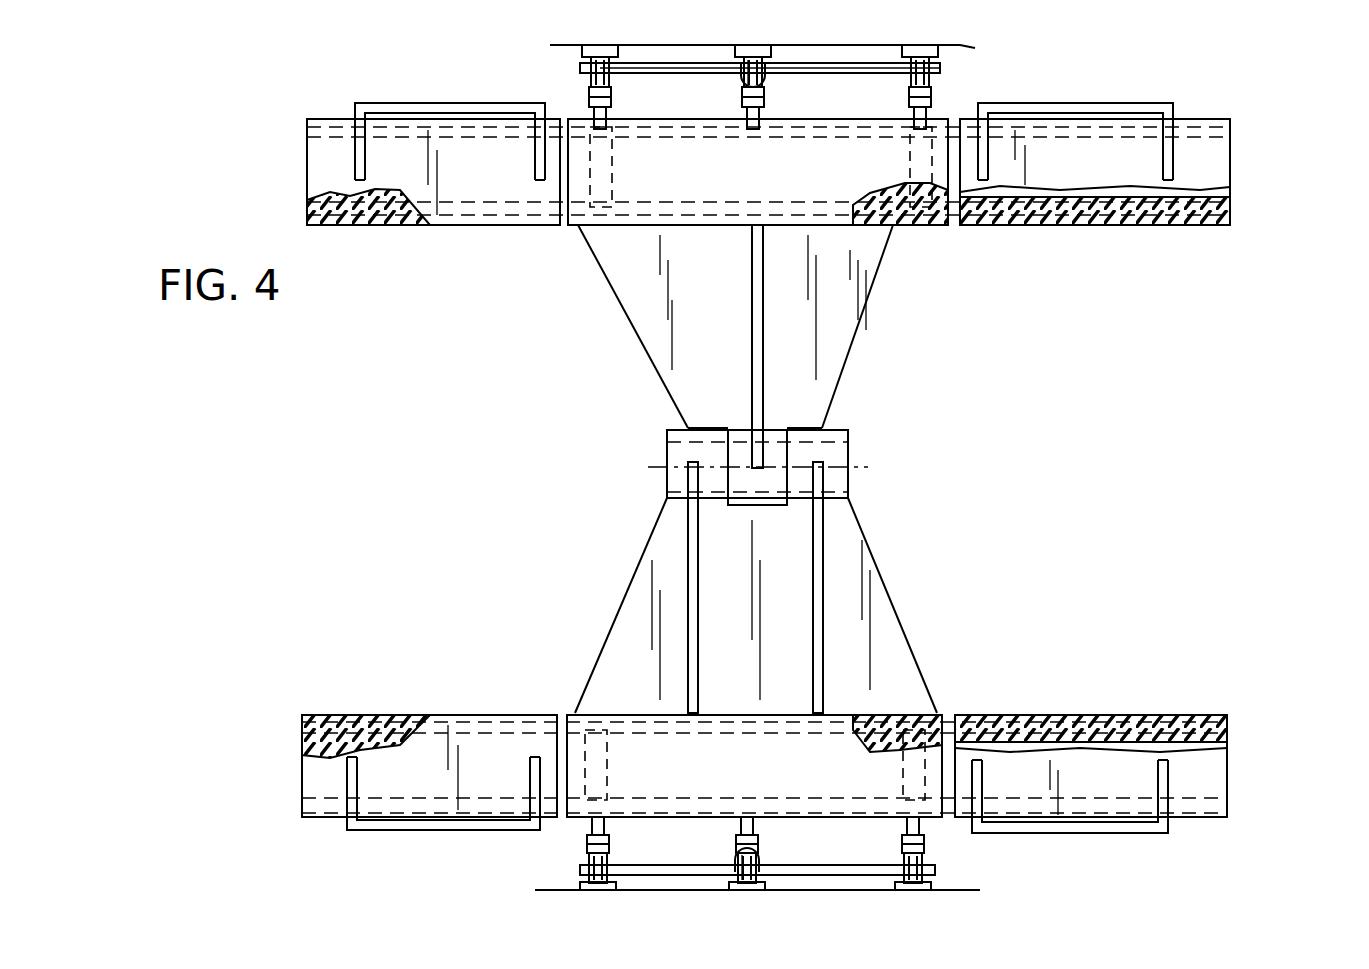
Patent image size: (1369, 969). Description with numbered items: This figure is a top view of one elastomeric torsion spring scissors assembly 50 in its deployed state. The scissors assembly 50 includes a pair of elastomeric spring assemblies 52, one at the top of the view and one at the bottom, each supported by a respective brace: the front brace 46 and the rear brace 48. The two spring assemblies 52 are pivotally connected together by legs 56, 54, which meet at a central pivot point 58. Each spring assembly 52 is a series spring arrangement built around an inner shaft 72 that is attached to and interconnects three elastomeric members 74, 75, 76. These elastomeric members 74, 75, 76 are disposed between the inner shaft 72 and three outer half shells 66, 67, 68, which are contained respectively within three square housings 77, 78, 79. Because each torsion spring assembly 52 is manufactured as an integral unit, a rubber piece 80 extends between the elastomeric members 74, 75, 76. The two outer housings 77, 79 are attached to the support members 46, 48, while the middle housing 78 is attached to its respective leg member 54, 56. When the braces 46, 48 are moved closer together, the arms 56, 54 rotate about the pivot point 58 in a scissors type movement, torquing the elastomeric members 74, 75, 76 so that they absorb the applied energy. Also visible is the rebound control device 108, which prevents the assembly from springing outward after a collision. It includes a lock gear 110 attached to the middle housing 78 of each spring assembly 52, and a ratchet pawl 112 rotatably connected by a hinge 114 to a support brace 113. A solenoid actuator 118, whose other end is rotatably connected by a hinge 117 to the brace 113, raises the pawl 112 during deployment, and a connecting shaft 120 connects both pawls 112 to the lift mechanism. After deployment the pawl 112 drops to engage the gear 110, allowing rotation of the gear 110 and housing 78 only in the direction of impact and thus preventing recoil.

The front brace 46 is at (406, 830).
The rear brace 48 is at (360, 112).
The scissors assembly 50 is at (488, 467).
The elastomeric torsion spring assembly 52 is at (1240, 161).
The arm 54 is at (895, 620).
The arm 56 is at (655, 344).
The pivot point 58 is at (838, 465).
The outer half shell 66 is at (1040, 226).
The outer half shell 67 is at (933, 228).
The outer half shell 68 is at (343, 225).
The inner shaft 72 is at (307, 201).
The elastomeric member 74 is at (1213, 226).
The elastomeric member 75 is at (890, 228).
The elastomeric member 76 is at (407, 230).
The square housing 77 is at (1100, 226).
The square housing 78 is at (930, 235).
The square housing 79 is at (390, 225).
The rubber piece 80 is at (566, 212).
The rebound control device 108 is at (556, 97).
The lock gear 110 is at (607, 110).
The ratchet pawl 112 is at (612, 91).
The support brace 113 is at (962, 48).
The hinge 114 is at (583, 60).
The hinge 117 is at (745, 85).
The solenoid actuator 118 is at (753, 85).
The connecting shaft 120 is at (808, 70).